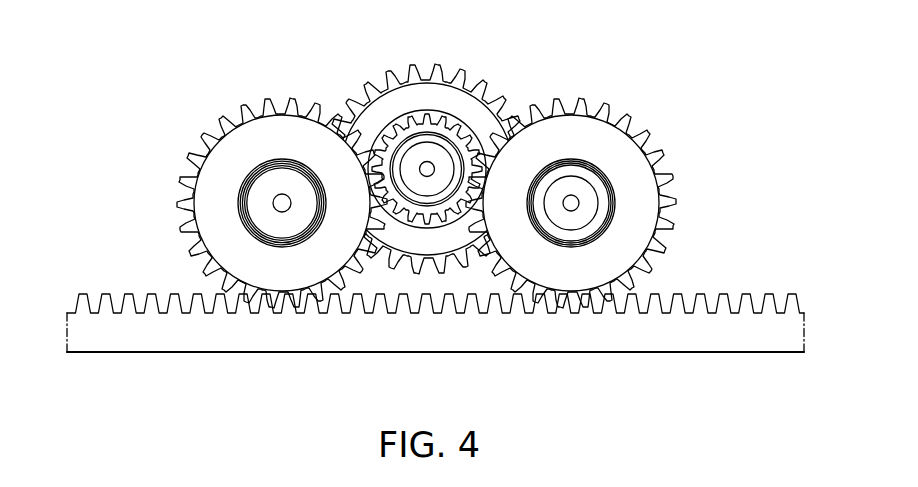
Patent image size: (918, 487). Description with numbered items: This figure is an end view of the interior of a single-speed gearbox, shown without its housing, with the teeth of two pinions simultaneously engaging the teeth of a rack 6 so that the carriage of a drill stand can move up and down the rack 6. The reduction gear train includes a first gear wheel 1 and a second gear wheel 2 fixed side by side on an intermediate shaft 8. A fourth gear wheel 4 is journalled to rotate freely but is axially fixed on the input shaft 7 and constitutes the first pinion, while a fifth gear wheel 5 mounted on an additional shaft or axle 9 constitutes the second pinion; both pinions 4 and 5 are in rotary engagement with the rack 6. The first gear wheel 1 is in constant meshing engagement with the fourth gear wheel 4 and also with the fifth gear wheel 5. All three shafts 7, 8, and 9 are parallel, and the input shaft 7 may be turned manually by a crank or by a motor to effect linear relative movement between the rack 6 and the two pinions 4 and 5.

The first gear wheel 1 is at (463, 127).
The second gear wheel 2 is at (370, 83).
The fourth gear wheel 4 is at (243, 113).
The fifth gear wheel 5 is at (626, 113).
The rack 6 is at (342, 332).
The input shaft 7 is at (265, 208).
The intermediate shaft 8 is at (430, 153).
The additional shaft or axle 9 is at (588, 199).